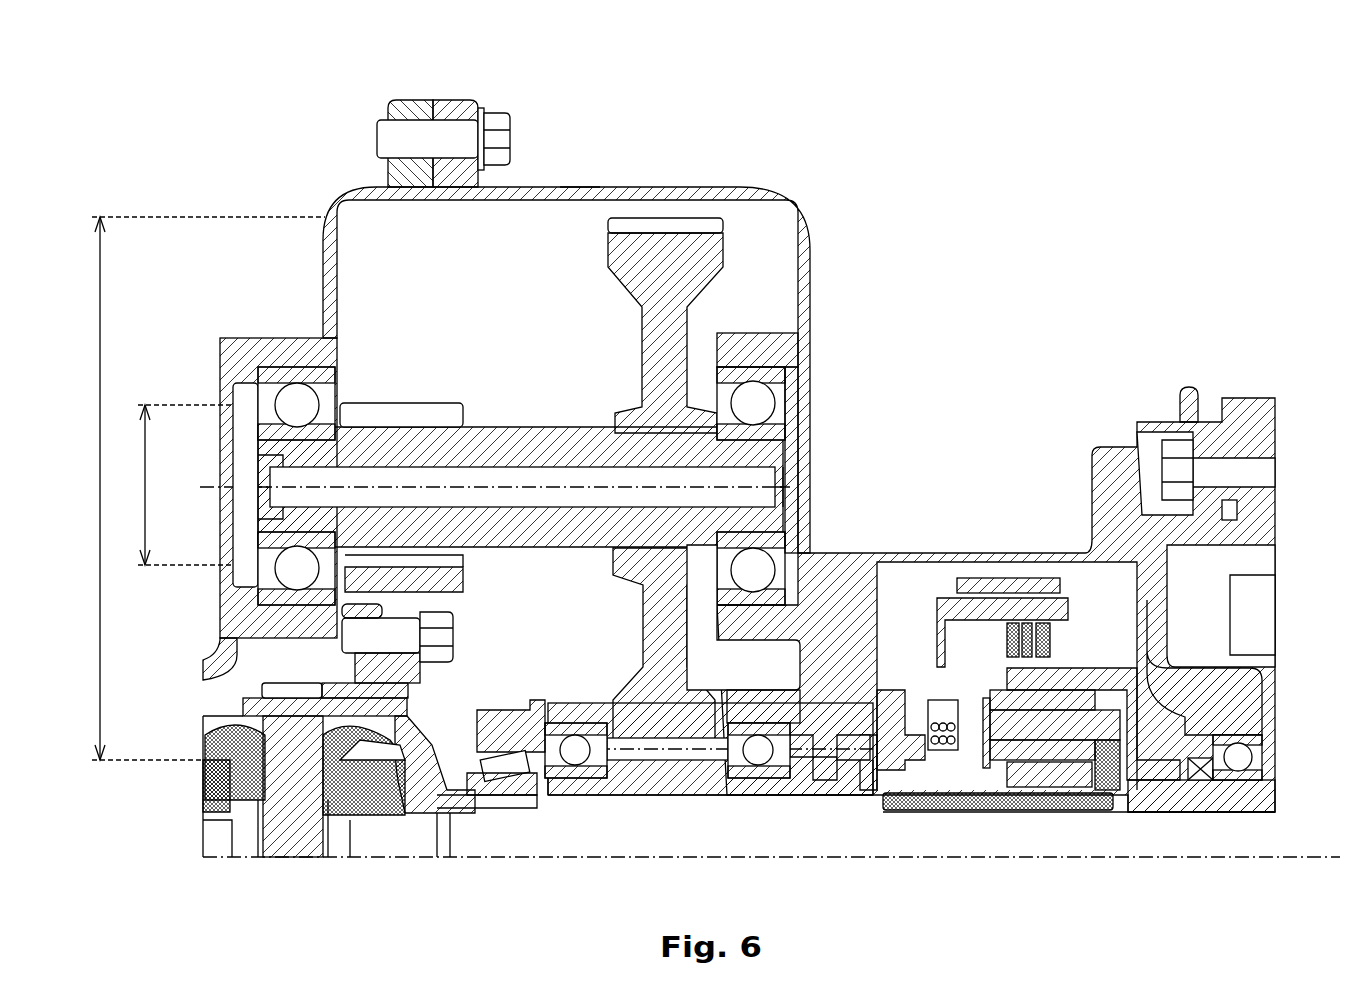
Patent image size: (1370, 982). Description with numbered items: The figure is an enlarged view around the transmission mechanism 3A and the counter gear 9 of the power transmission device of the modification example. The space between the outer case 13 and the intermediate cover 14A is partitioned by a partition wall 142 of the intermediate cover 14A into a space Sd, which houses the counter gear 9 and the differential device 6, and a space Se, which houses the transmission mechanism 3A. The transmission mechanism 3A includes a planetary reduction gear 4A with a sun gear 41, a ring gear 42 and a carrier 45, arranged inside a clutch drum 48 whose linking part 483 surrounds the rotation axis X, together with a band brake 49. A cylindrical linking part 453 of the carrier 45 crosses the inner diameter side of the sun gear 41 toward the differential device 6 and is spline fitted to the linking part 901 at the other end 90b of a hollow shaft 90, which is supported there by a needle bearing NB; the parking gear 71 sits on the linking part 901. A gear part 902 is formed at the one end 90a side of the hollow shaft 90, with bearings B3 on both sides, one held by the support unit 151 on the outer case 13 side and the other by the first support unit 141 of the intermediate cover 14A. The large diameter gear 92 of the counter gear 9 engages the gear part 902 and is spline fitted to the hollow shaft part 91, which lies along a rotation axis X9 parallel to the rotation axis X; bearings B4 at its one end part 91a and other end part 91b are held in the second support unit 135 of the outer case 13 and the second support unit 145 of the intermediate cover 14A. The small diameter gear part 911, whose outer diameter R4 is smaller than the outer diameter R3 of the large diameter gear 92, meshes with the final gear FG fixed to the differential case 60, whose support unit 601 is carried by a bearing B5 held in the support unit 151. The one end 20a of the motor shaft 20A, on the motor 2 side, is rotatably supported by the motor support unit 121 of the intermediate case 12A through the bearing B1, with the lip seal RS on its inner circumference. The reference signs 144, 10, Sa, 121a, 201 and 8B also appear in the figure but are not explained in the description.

The outer case 13 is at (388, 91).
The intermediate cover 14A is at (478, 96).
The top wall of case 144 is at (575, 195).
The large diameter gear 92 is at (660, 220).
The counter gear 9 is at (779, 262).
The second support unit 135 is at (240, 350).
The bearing B4 is at (298, 365).
The space Sd is at (522, 308).
The small diameter gear part 911 is at (410, 405).
The hollow shaft part 91 is at (492, 435).
The second support unit 145 is at (780, 352).
The intermediate case 12A is at (1162, 407).
The case 10 is at (1273, 390).
The outer diameter R3 is at (196, 488).
The outer diameter R4 is at (186, 485).
The rotation axis X9 is at (484, 490).
The one end part 91a is at (274, 458).
The other end part 91b is at (758, 488).
The transmission mechanism 3A is at (965, 505).
The clutch drum 48 is at (933, 590).
The band brake 49 is at (1020, 578).
The space Se is at (1106, 590).
The space Sa is at (1218, 590).
The planetary reduction gear 4A is at (1130, 654).
The ring gear 42 is at (1093, 670).
The motor 2 is at (1292, 608).
The final gear FG is at (463, 582).
The wall portion 121a is at (1228, 600).
The motor support unit 121 is at (1248, 695).
The differential device 6 is at (458, 696).
The support unit 151 is at (504, 712).
The partition wall 142 is at (800, 667).
The first support unit 141 is at (750, 710).
The parking gear 71 is at (822, 765).
The carrier 45 is at (1120, 707).
The differential case 60 is at (411, 732).
The bearing B1 is at (1245, 757).
The motor shaft 20A is at (1292, 789).
The bearing B5 is at (507, 775).
The bearing B3 is at (577, 760).
The gear part 902 is at (665, 785).
The linking part 901 is at (900, 770).
The needle bearing NB is at (950, 760).
The linking part 453 is at (1035, 790).
The sun gear 41 is at (1065, 785).
The one end 20a is at (1117, 795).
The lip seal RS is at (1202, 780).
The support unit 601 is at (482, 812).
The one end 90a is at (550, 810).
The hollow shaft 90 is at (734, 820).
The other end 90b is at (972, 812).
The linking part 483 is at (1100, 790).
The shaft portion 201 is at (1163, 812).
The shaft 8B is at (1251, 818).
The rotation axis X is at (780, 857).